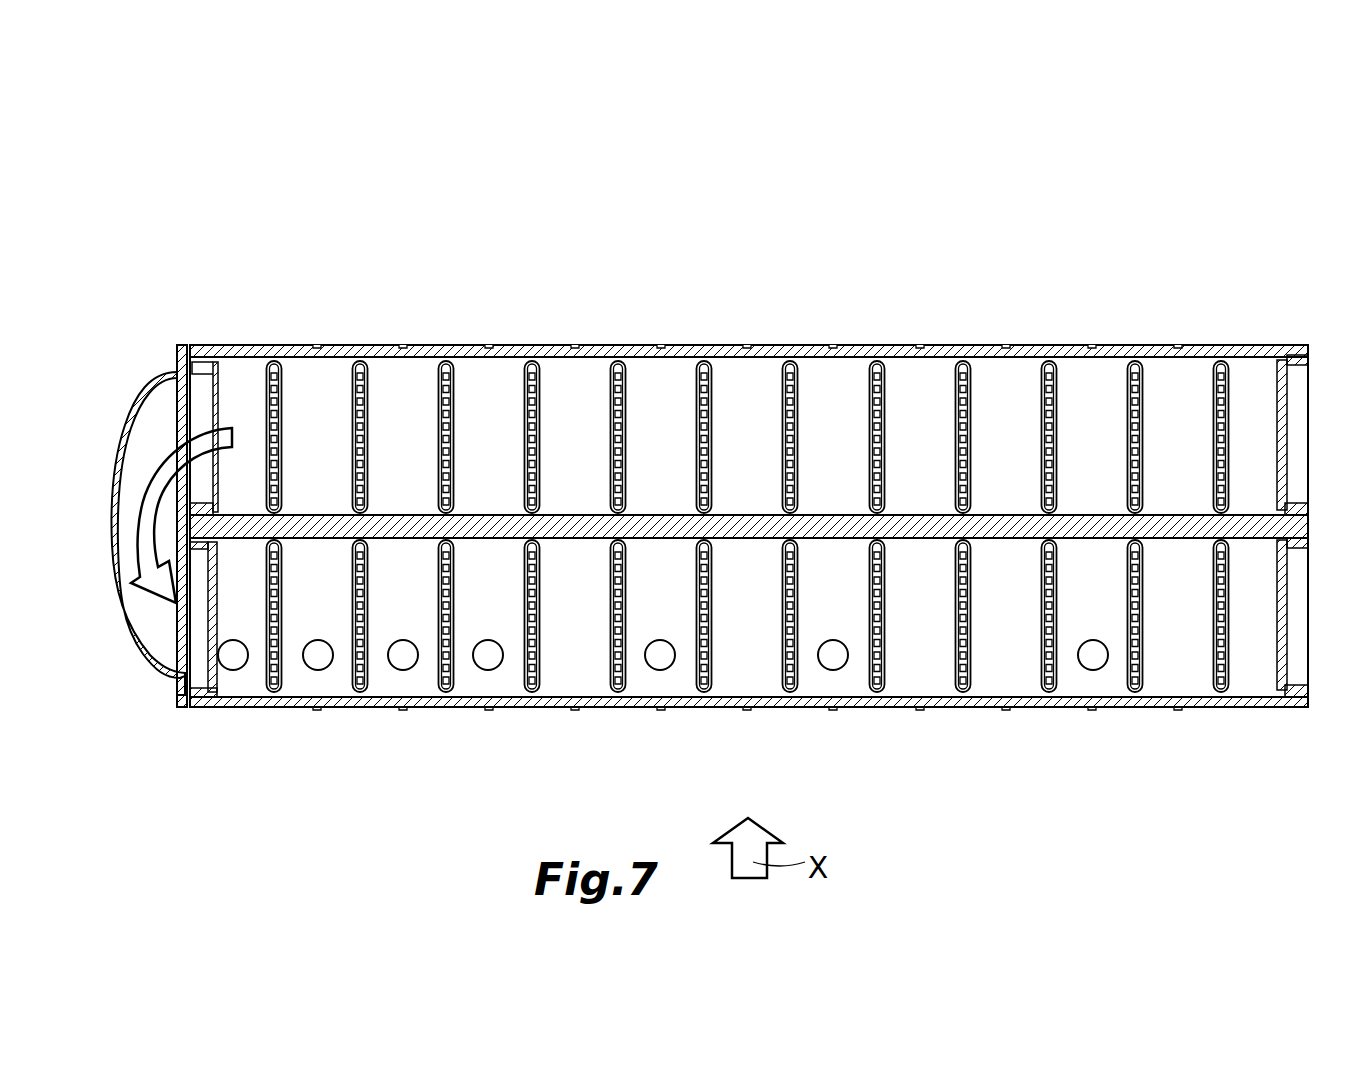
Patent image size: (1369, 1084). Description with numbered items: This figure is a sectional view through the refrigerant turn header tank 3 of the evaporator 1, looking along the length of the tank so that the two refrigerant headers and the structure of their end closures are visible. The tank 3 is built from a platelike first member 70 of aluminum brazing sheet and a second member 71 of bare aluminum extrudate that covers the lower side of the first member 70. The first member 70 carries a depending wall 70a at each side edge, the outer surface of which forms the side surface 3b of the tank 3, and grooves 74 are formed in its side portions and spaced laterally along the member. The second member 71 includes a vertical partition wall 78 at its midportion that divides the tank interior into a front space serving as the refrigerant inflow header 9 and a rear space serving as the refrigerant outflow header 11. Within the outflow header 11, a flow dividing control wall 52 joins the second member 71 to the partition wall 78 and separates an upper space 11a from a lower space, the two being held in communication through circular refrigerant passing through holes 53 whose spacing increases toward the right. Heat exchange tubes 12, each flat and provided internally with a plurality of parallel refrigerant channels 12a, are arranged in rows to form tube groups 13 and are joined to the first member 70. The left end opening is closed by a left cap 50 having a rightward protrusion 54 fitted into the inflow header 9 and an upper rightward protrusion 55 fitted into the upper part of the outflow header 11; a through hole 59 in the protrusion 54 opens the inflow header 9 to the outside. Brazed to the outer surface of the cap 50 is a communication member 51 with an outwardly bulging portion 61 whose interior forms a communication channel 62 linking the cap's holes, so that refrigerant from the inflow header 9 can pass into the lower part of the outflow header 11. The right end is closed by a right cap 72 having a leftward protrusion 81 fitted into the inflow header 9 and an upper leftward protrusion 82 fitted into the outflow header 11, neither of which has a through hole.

The apparatus 1 is at (1177, 243).
The refrigerant turn header tank 3 is at (744, 291).
The side surface 3b is at (600, 345).
The refrigerant inflow header 9 is at (728, 457).
The refrigerant outflow header 11 is at (728, 625).
The upper space 11a is at (1080, 680).
The heat exchange tube 12 is at (367, 395).
The refrigerant channel 12a is at (452, 418).
The tube group 13 is at (1230, 452).
The left cap 50 is at (185, 345).
The communication member 51 is at (170, 693).
The flow dividing control wall 52 is at (577, 640).
The refrigerant passing circular through hole 53 is at (662, 670).
The rightward protrusion 54 is at (222, 400).
The upper rightward protrusion 55 is at (227, 690).
The through hole 59 is at (226, 368).
The outwardly bulging portion 61 is at (130, 628).
The communication channel 62 is at (150, 428).
The first member 70 is at (995, 345).
The depending wall 70a is at (935, 345).
The second member 71 is at (833, 392).
The right cap 72 is at (1303, 345).
The groove 74 is at (1090, 345).
The partition wall 78 is at (918, 522).
The leftward protrusion 81 is at (1263, 370).
The upper leftward protrusion 82 is at (1287, 690).